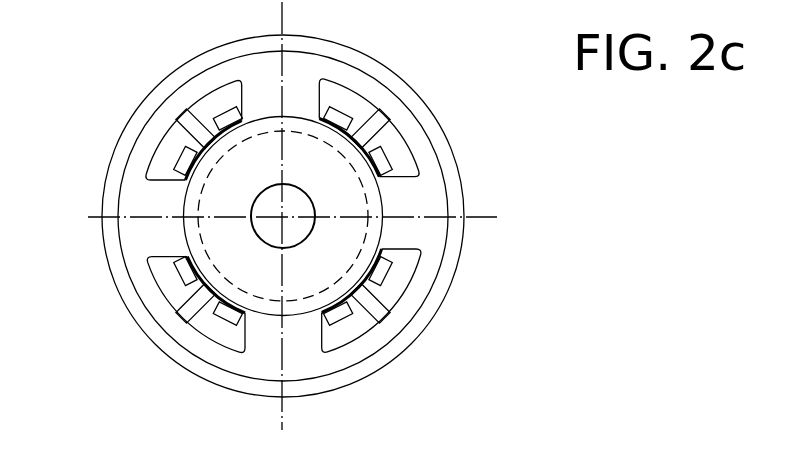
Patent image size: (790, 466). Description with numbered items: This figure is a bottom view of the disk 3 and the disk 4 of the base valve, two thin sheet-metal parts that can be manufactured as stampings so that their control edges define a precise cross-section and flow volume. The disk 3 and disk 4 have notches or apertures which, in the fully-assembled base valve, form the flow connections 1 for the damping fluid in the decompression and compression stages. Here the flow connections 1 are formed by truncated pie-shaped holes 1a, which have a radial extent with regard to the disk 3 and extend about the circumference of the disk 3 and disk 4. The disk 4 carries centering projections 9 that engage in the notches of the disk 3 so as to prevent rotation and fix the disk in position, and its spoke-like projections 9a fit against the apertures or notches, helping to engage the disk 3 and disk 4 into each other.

The flow connections 1 is at (337, 216).
The truncated pie-shaped holes 1a is at (402, 277).
The disk 3 is at (145, 230).
The disk 4 is at (191, 310).
The centering projections 9 is at (286, 274).
The spoke-like projections 9a is at (188, 132).